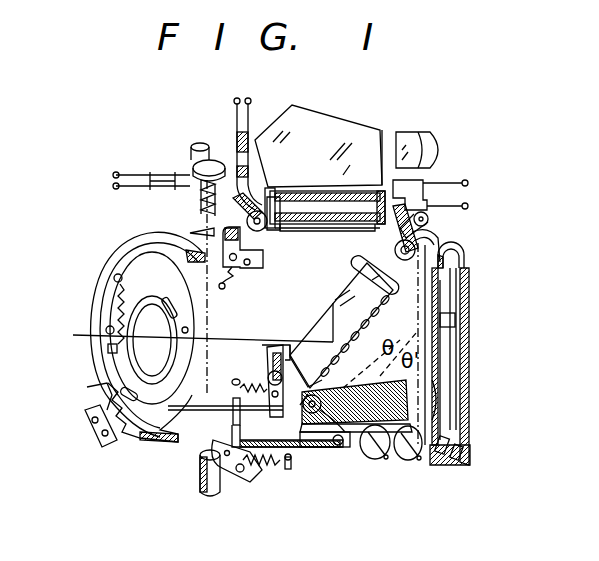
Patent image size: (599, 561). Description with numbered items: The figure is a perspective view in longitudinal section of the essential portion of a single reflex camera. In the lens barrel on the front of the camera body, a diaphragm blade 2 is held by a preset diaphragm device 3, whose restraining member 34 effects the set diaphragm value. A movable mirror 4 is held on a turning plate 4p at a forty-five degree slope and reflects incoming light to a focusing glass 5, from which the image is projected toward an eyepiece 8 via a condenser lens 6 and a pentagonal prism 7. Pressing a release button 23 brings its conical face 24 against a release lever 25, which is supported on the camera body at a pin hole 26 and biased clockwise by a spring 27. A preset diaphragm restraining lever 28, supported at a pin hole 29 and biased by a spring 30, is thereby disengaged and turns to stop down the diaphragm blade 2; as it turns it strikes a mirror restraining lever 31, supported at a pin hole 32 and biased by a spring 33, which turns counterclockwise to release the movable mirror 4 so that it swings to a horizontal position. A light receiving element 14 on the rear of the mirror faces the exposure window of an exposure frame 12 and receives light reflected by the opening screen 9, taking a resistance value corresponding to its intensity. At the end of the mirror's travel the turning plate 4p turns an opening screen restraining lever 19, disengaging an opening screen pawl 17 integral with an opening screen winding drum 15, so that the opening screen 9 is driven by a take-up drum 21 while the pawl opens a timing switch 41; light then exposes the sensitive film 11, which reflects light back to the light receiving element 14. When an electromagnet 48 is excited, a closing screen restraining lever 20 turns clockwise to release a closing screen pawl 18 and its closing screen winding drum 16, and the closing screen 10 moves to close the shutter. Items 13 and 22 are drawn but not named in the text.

The diaphragm blade 2 is at (160, 262).
The preset diaphragm device 3 is at (135, 440).
The movable mirror 4 is at (335, 296).
The turning plate 4p is at (372, 336).
The focusing glass 5 is at (322, 229).
The condenser lens 6 is at (372, 152).
The pentagonal prism 7 is at (318, 138).
The eyepiece 8 is at (425, 140).
The opening screen 9 is at (450, 326).
The closing screen 10 is at (430, 386).
The sensitive film 11 is at (456, 296).
The exposure frame 12 is at (462, 262).
The outer frame wall 13 is at (468, 352).
The light receiving element 14 is at (336, 447).
The opening screen winding drum 15 is at (280, 203).
The closing screen winding drum 16 is at (440, 228).
The opening screen pawl 17 is at (235, 210).
The closing screen pawl 18 is at (466, 206).
The opening screen restraining lever 19 is at (232, 262).
The closing screen restraining lever 20 is at (466, 182).
The take-up drum 21 is at (370, 458).
The roller 22 is at (405, 458).
The release button 23 is at (205, 145).
The conical face 24 is at (200, 480).
The release lever 25 is at (255, 472).
The pin hole 26 is at (258, 465).
The spring 27 is at (290, 470).
The preset diaphragm restraining lever 28 is at (233, 398).
The pin hole 29 is at (342, 452).
The spring 30 is at (295, 452).
The mirror restraining lever 31 is at (270, 348).
The pin hole 32 is at (302, 374).
The spring 33 is at (255, 390).
The restraining member 34 is at (92, 396).
The timing switch 41 is at (240, 145).
The electromagnet 48 is at (420, 185).